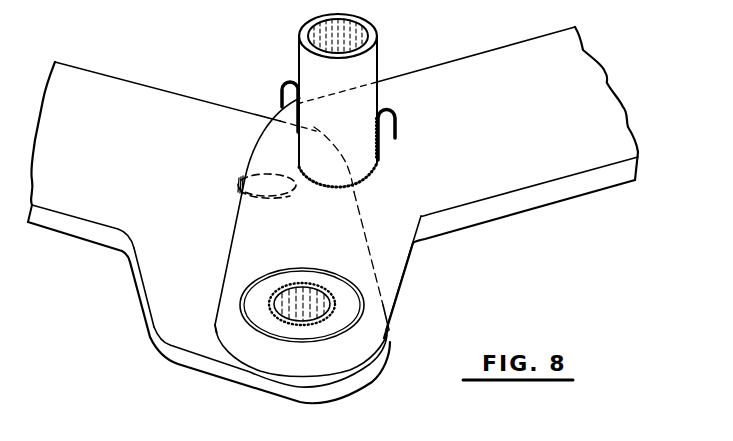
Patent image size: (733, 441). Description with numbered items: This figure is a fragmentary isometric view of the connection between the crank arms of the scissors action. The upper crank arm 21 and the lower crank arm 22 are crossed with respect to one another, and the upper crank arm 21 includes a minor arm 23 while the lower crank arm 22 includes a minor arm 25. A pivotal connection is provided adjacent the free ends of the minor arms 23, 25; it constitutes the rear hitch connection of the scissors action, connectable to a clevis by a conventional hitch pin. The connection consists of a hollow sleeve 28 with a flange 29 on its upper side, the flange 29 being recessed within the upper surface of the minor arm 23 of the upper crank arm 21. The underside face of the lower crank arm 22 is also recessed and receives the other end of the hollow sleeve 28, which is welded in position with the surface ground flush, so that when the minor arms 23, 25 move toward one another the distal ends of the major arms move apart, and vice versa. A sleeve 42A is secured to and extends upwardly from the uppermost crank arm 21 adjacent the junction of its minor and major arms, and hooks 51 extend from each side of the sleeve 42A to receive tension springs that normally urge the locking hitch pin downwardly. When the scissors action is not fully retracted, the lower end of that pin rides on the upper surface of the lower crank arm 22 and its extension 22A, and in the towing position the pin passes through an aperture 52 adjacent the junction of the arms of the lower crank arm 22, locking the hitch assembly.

The upper crank arm 21 is at (532, 168).
The lower crank arm 22 is at (113, 208).
The extension 22A is at (167, 304).
The minor arm 23 is at (391, 255).
The minor arm 25 is at (144, 295).
The hollow sleeve 28 is at (282, 284).
The flange 29 is at (310, 292).
The sleeve 42A is at (372, 57).
The hooks 51 is at (282, 88).
The aperture 52 is at (274, 201).